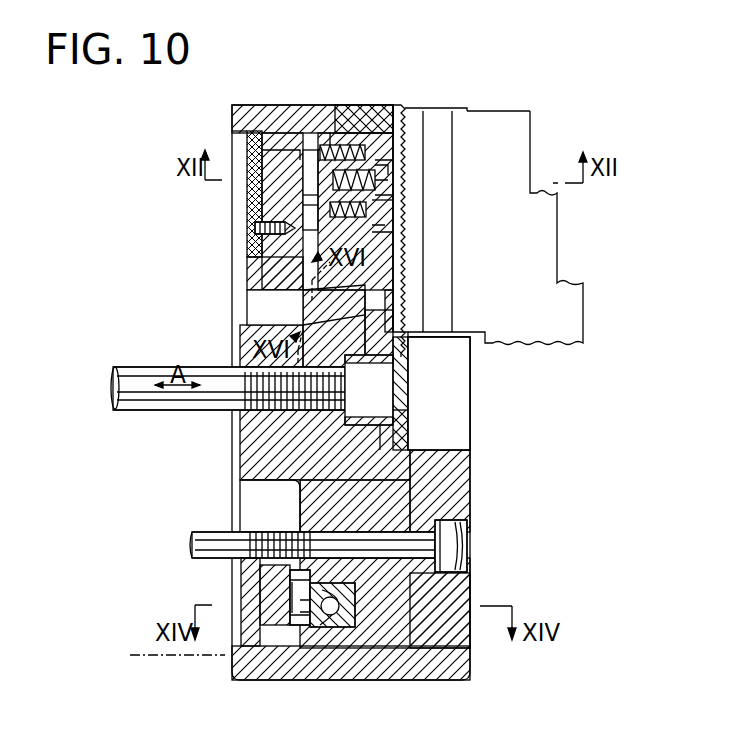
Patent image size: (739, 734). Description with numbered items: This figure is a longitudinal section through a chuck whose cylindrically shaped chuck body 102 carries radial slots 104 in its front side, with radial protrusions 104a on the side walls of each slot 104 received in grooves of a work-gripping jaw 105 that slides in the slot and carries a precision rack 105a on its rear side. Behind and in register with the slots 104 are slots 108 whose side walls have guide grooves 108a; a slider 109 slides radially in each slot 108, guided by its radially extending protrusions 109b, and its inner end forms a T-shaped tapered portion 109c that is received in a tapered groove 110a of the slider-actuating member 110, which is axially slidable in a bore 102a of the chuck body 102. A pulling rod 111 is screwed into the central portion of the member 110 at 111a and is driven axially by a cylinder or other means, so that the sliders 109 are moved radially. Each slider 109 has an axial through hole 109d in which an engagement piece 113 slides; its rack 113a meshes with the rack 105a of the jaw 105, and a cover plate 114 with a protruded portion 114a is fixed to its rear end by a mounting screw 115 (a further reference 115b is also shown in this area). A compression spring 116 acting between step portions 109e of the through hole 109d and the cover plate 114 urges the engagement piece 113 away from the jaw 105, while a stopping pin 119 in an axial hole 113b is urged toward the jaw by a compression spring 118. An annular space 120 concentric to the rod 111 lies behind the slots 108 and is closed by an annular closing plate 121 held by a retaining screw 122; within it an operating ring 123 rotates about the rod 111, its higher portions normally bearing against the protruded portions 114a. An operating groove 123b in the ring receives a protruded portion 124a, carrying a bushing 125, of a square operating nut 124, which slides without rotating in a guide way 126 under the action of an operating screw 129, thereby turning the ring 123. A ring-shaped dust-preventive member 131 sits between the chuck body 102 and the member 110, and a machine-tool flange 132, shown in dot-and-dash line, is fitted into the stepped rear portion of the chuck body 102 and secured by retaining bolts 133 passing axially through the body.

The chuck body 102 is at (246, 118).
The bore 102a is at (300, 497).
The radial slots 104 is at (410, 115).
The radial protrusions 104a is at (490, 96).
The work-gripping jaw 105 is at (520, 127).
The precision rack 105a is at (400, 318).
The slots 108 is at (306, 158).
The guide grooves 108a is at (366, 118).
The slider 109 is at (395, 110).
The radially extending protrusions 109b is at (375, 288).
The tapered portion 109c is at (330, 333).
The through hole 109d is at (400, 240).
The step portions 109e is at (356, 150).
The slider-actuating member 110 is at (250, 430).
The tapered grooves 110a is at (372, 345).
The pulling rod 111 is at (143, 375).
The screw connection 111a is at (262, 403).
The engagement piece 113 is at (388, 164).
The rack 113a is at (395, 201).
The hole 113b is at (305, 206).
The cover plate 114 is at (305, 193).
The protruded portion 114a is at (262, 158).
The mounting screw 115 is at (322, 148).
The collar portion 115b is at (437, 164).
The compression spring 116 is at (375, 230).
The compression spring 118 is at (310, 177).
The stopping pin 119 is at (383, 183).
The annular space 120 is at (305, 622).
The annular closing plate 121 is at (245, 598).
The retaining screw 122 is at (262, 241).
The operating ring 123 is at (262, 582).
The operating groove 123b is at (310, 576).
The operating nut 124 is at (345, 624).
The protruded portion 124a is at (303, 617).
The bushing 125 is at (296, 612).
The guide way 126 is at (340, 610).
The operating screw 129 is at (335, 606).
The dust-preventive member 131 is at (405, 450).
The flange 132 is at (140, 658).
The retaining bolts 133 is at (450, 544).